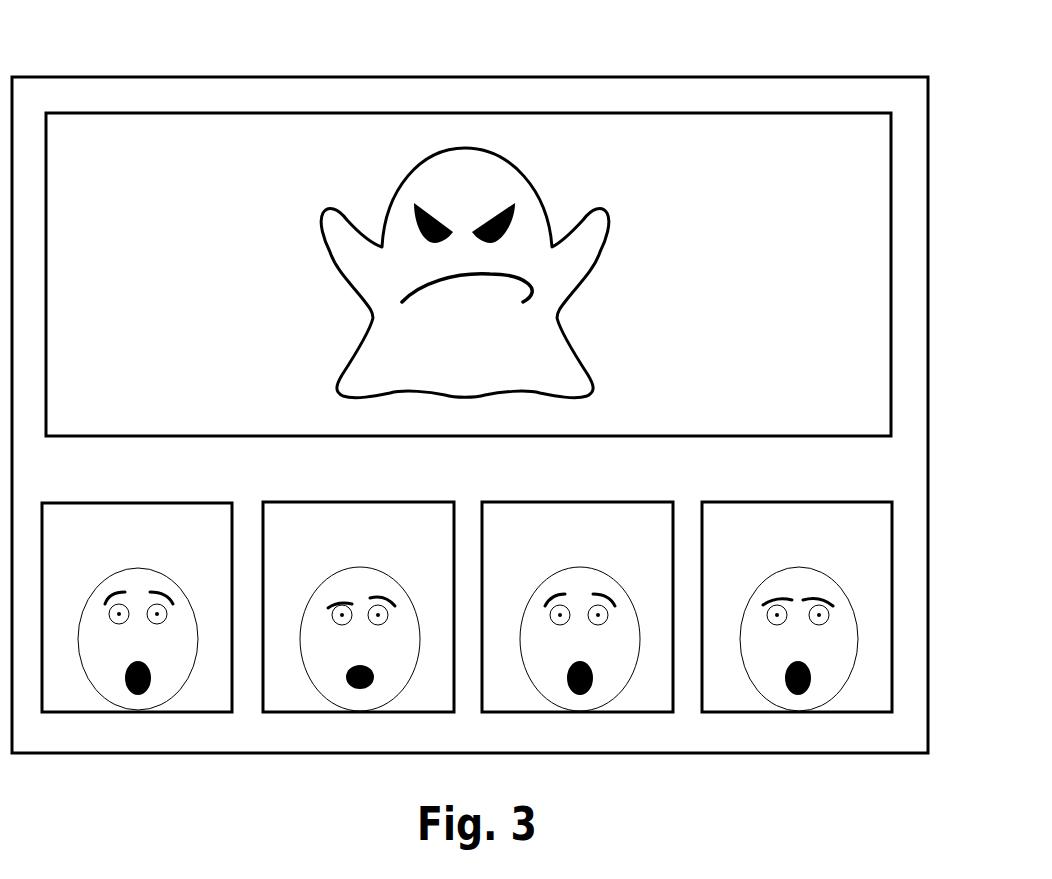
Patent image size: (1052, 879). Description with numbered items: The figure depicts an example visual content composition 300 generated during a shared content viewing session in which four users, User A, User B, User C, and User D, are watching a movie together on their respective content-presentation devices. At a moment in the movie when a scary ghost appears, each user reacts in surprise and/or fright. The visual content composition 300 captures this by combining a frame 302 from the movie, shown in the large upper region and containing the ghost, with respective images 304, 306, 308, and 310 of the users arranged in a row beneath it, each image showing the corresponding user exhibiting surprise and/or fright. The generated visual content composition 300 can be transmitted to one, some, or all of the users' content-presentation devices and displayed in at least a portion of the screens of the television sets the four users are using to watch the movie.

The visual content composition 300 is at (743, 77).
The frame 302 is at (250, 113).
The image of User A 304 is at (158, 503).
The image of User B 306 is at (381, 502).
The image of User C 308 is at (600, 502).
The image of User D 310 is at (818, 502).